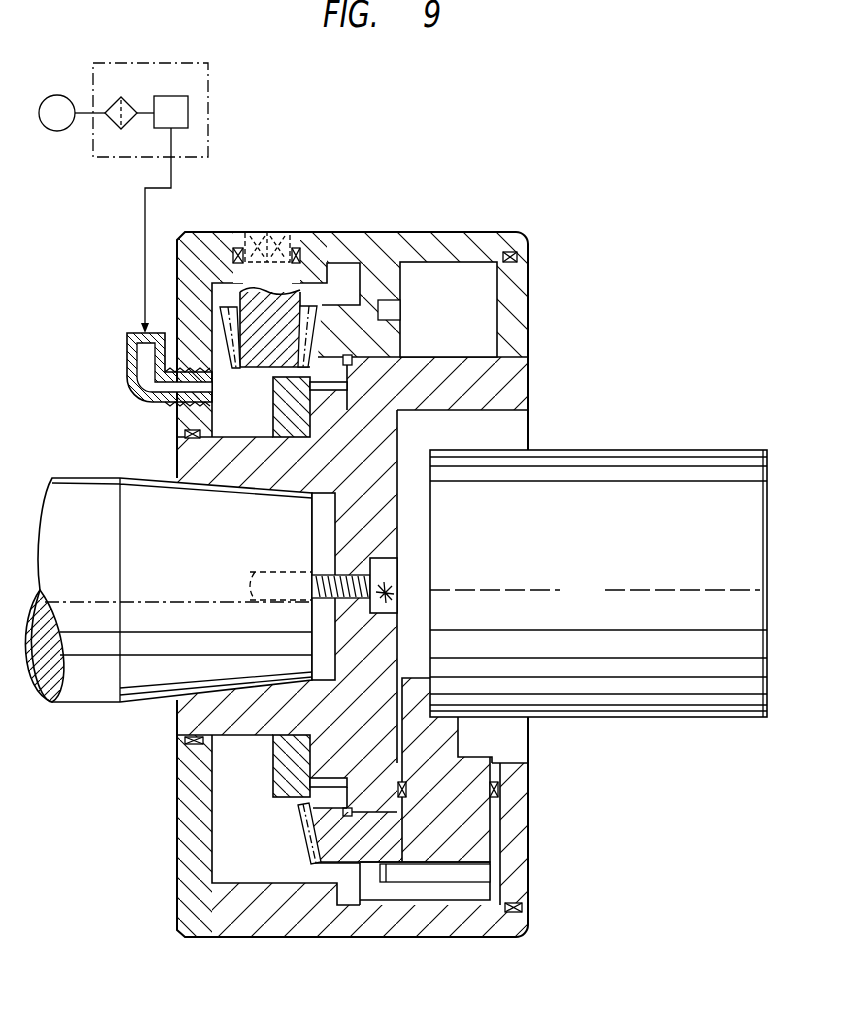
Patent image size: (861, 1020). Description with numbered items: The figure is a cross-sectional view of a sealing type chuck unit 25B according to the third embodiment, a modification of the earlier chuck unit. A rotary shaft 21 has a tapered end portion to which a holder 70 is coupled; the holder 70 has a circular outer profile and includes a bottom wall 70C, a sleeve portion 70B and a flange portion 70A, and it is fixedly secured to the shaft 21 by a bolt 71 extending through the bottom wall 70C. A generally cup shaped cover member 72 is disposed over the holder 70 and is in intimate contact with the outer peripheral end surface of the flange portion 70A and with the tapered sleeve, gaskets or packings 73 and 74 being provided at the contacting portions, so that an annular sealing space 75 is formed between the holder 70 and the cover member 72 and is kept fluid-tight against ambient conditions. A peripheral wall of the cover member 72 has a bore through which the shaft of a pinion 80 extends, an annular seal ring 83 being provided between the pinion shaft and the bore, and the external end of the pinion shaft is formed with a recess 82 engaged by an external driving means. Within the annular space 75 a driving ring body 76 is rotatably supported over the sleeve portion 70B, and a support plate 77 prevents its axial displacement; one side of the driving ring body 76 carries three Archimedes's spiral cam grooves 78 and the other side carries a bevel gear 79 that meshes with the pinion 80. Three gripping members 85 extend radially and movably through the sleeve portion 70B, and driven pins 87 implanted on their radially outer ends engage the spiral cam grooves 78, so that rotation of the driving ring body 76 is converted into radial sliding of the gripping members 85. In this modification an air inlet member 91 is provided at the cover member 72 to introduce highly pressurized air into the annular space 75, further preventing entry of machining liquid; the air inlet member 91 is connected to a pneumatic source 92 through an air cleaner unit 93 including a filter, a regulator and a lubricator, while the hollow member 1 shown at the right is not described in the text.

The hollow shaft 1 is at (708, 462).
The rotary shaft 21 is at (92, 700).
The chuck unit 25B is at (264, 184).
The holder 70 is at (403, 545).
The flange portion 70A is at (518, 307).
The sleeve portion 70B is at (435, 392).
The bottom wall 70C is at (363, 530).
The bolt 71 is at (387, 573).
The cover member 72 is at (379, 226).
The gasket or packing 73 is at (530, 256).
The gasket or packing 74 is at (193, 748).
The annular sealing space 75 is at (480, 272).
The driving ring body 76 is at (350, 843).
The support plate 77 is at (285, 775).
The Archimedes's spiral cam grooves 78 is at (392, 308).
The bevel gear 79 is at (300, 840).
The pinion 80 is at (290, 298).
The recess 82 is at (278, 245).
The annular seal ring 83 is at (236, 248).
The gripping members 85 is at (480, 844).
The driven pins 87 is at (394, 875).
The air inlet member 91 is at (127, 377).
The pneumatic source 92 is at (57, 94).
The hydraulic unit 93 is at (160, 63).